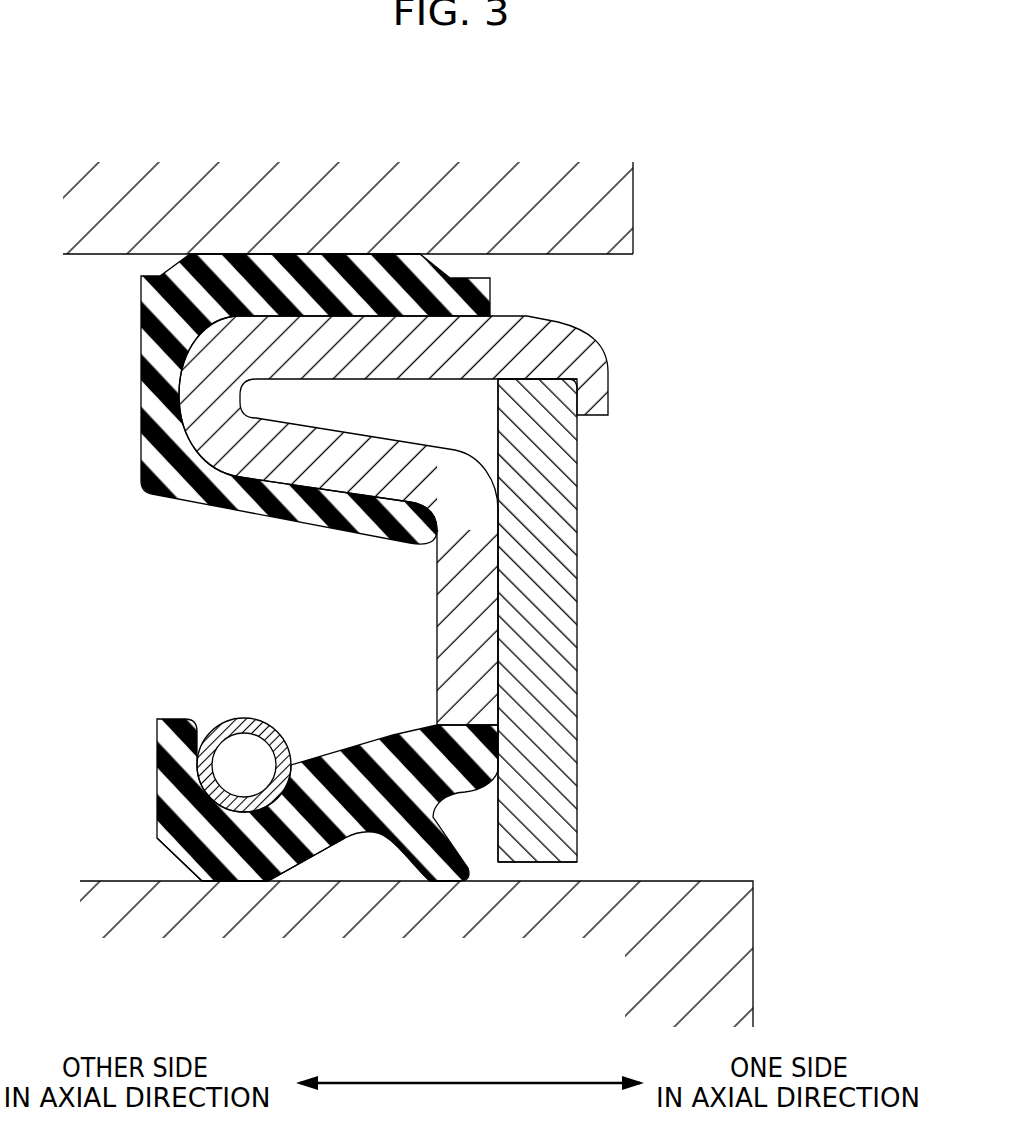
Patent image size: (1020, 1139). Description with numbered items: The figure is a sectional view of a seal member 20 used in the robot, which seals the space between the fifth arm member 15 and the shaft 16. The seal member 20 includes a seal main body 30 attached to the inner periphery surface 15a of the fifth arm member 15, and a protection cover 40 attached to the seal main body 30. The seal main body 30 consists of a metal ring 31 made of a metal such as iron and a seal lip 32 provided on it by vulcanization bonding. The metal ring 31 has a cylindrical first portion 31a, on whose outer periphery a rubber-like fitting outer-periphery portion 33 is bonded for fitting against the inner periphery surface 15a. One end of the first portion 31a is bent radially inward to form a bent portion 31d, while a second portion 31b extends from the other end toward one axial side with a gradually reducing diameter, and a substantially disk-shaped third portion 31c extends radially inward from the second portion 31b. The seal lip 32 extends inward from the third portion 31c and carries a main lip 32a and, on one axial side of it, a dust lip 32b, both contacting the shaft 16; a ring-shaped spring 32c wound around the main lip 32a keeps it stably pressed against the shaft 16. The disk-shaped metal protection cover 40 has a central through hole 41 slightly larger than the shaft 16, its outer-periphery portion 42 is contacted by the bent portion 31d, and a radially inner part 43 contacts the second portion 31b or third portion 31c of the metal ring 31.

The fifth arm member 15 is at (416, 230).
The inner periphery surface 15a is at (600, 257).
The shaft 16 is at (755, 975).
The seal member 20 is at (391, 560).
The seal main body 30 is at (263, 328).
The metal ring 31 is at (383, 418).
The first portion 31a is at (400, 335).
The second portion 31b is at (325, 465).
The third portion 31c is at (475, 637).
The bent portion 31d is at (600, 390).
The seal lip 32 is at (327, 815).
The main lip 32a is at (235, 873).
The dust lip 32b is at (423, 856).
The ring-shaped spring 32c is at (237, 718).
The fitting outer-periphery portion 33 is at (235, 258).
The protection cover 40 is at (585, 622).
The through hole 41 is at (552, 865).
The outer-periphery portion 42 is at (567, 400).
The part of protection cover 43 is at (518, 706).